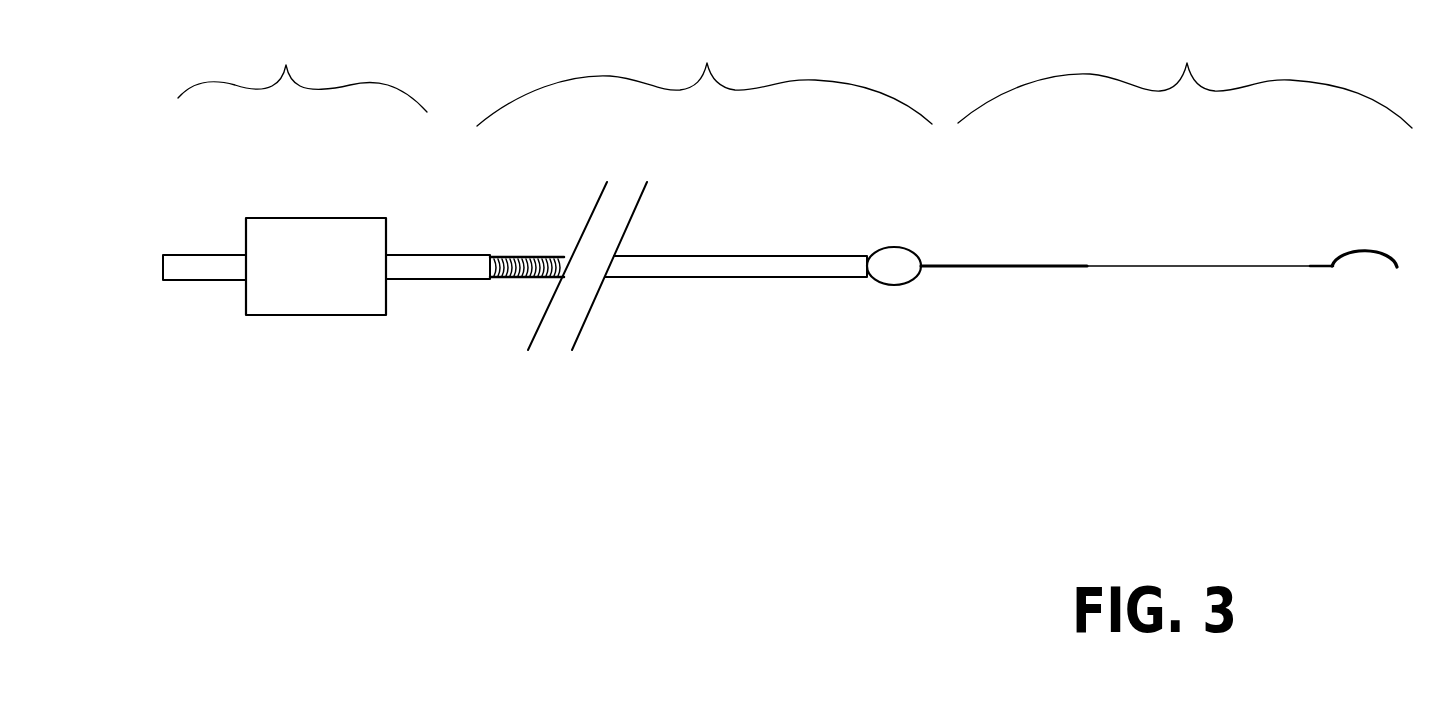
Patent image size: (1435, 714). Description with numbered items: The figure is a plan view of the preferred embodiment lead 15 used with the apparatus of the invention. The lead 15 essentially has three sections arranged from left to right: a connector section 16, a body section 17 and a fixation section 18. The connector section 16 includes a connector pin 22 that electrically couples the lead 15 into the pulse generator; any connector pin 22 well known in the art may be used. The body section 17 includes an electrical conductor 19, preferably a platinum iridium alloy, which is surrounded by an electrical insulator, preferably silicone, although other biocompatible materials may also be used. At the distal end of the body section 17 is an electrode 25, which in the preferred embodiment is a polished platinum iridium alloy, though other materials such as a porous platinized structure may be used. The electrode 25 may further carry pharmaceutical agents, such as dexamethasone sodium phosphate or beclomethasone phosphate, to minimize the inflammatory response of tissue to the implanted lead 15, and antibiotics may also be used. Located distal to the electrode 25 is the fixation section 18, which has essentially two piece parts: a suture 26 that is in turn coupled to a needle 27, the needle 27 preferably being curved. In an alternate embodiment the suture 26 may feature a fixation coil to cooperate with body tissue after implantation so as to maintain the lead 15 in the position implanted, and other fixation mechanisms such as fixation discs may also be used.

The lead 15 is at (287, 412).
The connector section 16 is at (302, 172).
The body section 17 is at (704, 188).
The fixation section 18 is at (402, 257).
The electrical conductor 19 is at (513, 255).
The connector pin 22 is at (180, 255).
The electrode 25 is at (890, 247).
The suture 26 is at (983, 265).
The needle 27 is at (1363, 247).